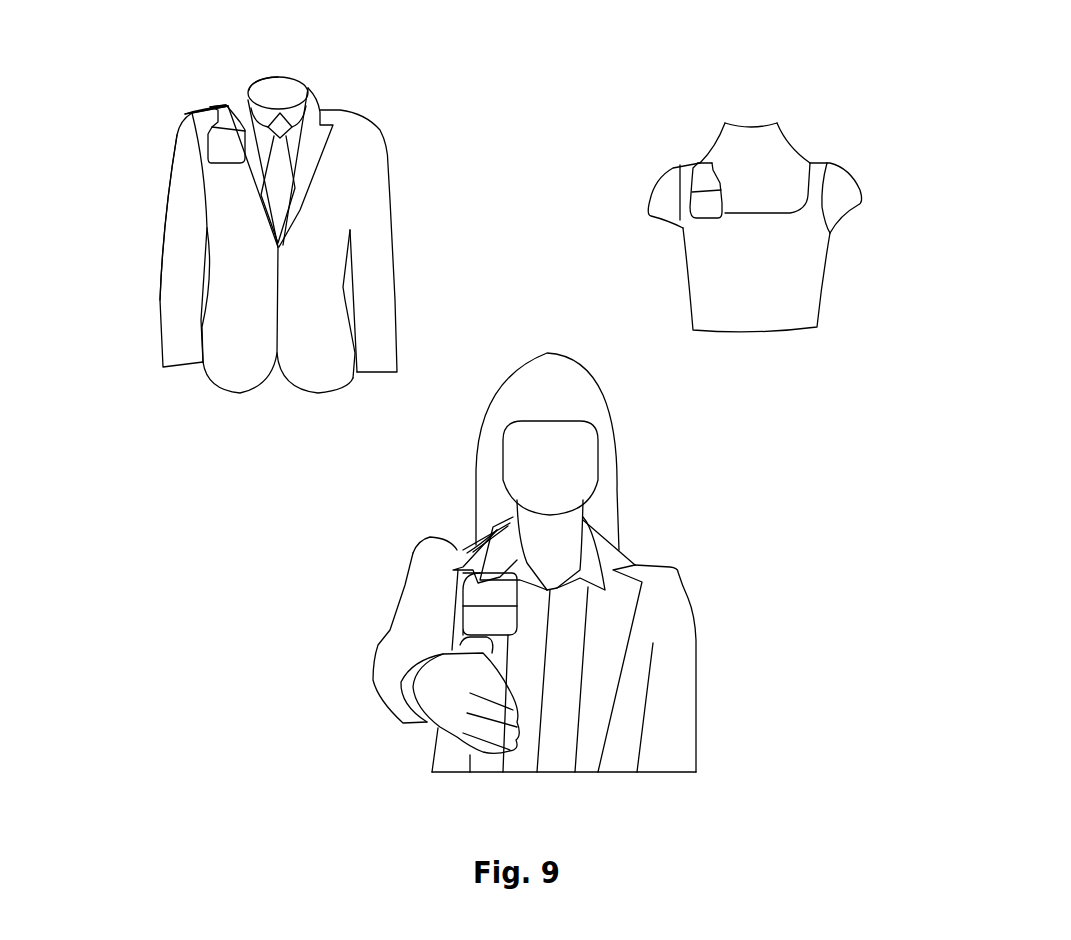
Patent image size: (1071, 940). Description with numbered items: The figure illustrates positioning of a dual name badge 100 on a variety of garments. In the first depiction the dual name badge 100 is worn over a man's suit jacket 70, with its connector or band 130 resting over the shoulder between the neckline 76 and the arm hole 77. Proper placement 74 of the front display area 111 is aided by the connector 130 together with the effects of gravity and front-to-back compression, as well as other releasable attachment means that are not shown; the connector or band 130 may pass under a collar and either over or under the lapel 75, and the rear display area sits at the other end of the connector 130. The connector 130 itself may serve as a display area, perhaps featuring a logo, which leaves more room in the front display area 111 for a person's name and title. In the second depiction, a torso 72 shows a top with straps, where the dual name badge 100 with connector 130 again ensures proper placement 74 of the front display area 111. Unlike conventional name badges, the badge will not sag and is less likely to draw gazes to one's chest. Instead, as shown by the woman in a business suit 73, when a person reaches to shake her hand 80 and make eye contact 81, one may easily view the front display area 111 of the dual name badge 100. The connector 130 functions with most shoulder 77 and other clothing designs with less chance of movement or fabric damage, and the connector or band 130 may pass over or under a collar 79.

The suit jacket 70 is at (410, 100).
The torso 72 is at (689, 119).
The woman in a business suit 73 is at (734, 657).
The proper placement 74 is at (250, 170).
The lapel 75 is at (155, 228).
The neckline 76 is at (253, 108).
The arm hole 77 is at (187, 114).
The collar 79 is at (497, 572).
The hand 80 is at (437, 693).
The eye contact 81 is at (583, 458).
The dual name badge 100 is at (207, 142).
The front display area 111 is at (226, 152).
The connector 130 is at (220, 107).